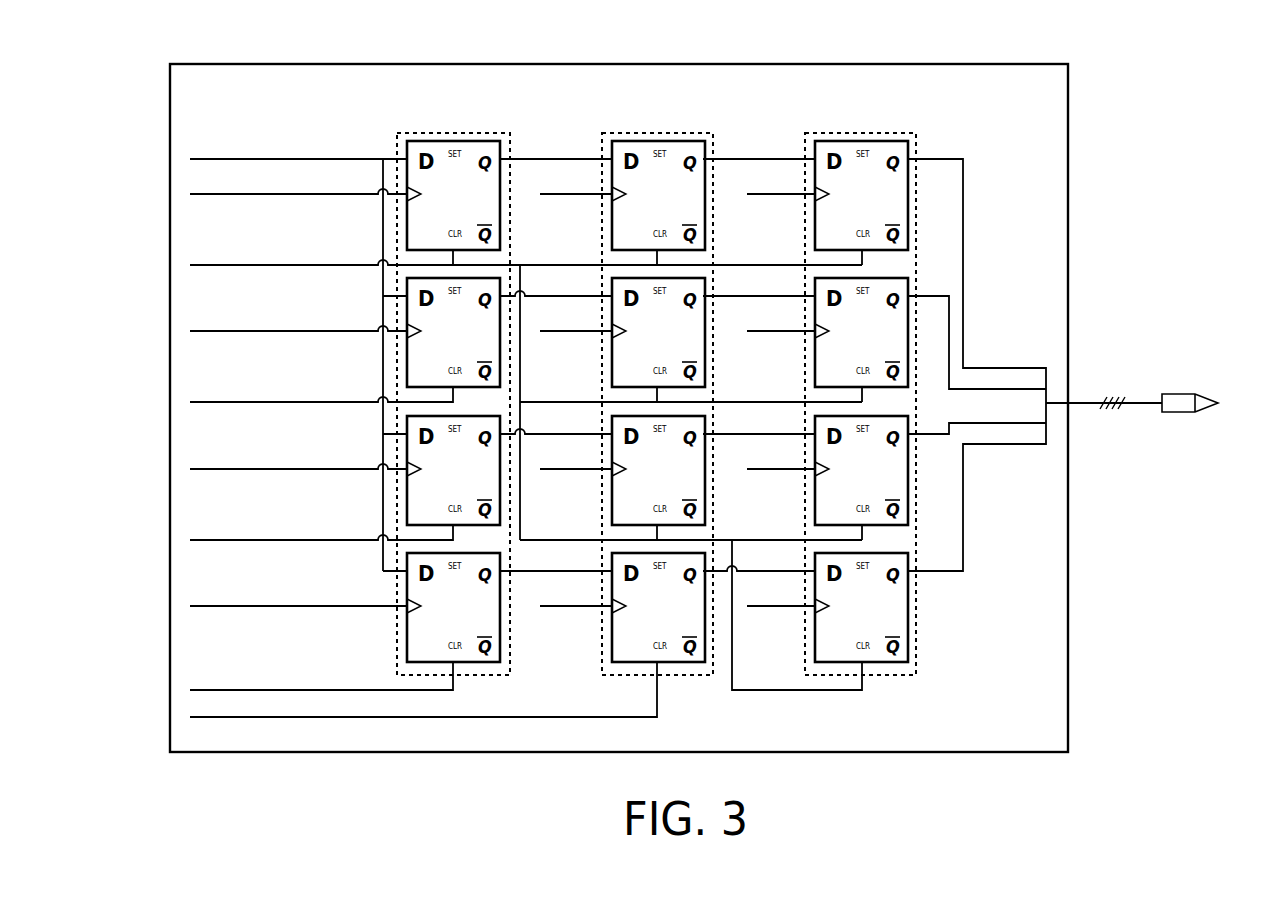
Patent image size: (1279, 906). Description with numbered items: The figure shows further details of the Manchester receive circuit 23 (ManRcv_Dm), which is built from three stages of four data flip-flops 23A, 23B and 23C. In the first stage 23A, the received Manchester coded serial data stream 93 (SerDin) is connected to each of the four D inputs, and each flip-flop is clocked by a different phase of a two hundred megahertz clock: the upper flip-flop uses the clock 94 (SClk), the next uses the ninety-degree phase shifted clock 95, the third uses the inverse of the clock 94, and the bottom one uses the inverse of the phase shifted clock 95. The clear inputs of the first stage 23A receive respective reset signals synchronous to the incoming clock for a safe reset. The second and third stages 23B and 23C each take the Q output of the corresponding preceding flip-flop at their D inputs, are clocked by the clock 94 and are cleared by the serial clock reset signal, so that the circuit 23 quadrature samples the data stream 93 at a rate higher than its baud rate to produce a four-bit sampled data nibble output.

The receive circuit 23 is at (616, 64).
The first stage of four flip-flops 23A is at (453, 132).
The second stage of four flip-flops 23B is at (659, 132).
The third stage of four flip-flops 23C is at (862, 132).
The Manchester coded serial data stream 93 is at (236, 159).
The 200 MHz clock 94 is at (238, 194).
The 90° phase shifted clock 95 is at (238, 331).